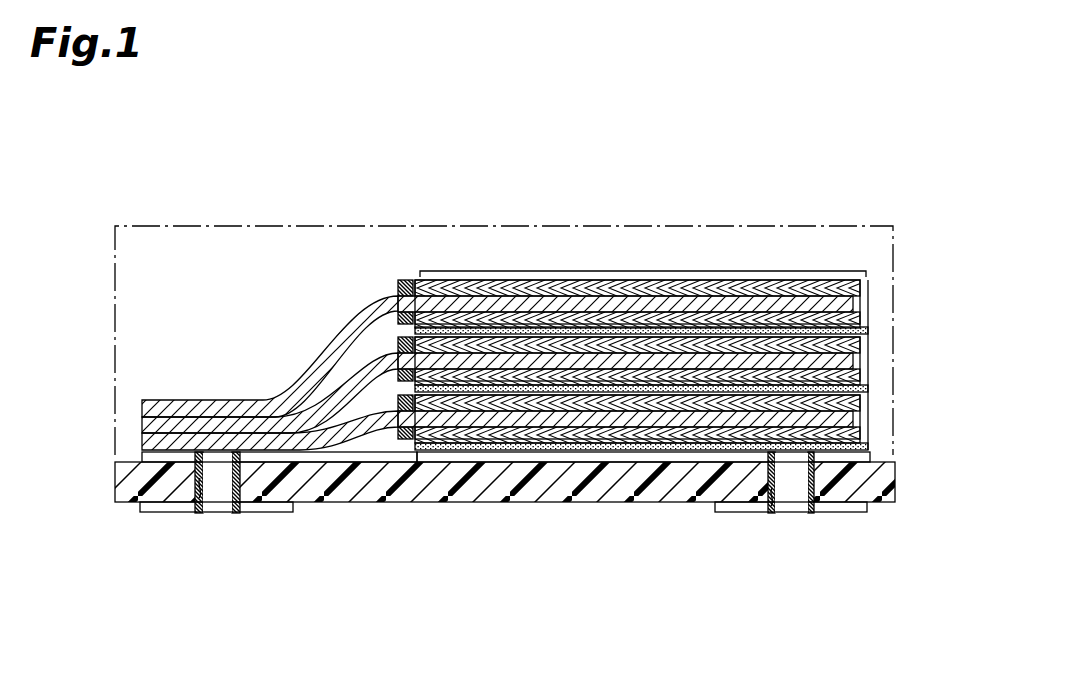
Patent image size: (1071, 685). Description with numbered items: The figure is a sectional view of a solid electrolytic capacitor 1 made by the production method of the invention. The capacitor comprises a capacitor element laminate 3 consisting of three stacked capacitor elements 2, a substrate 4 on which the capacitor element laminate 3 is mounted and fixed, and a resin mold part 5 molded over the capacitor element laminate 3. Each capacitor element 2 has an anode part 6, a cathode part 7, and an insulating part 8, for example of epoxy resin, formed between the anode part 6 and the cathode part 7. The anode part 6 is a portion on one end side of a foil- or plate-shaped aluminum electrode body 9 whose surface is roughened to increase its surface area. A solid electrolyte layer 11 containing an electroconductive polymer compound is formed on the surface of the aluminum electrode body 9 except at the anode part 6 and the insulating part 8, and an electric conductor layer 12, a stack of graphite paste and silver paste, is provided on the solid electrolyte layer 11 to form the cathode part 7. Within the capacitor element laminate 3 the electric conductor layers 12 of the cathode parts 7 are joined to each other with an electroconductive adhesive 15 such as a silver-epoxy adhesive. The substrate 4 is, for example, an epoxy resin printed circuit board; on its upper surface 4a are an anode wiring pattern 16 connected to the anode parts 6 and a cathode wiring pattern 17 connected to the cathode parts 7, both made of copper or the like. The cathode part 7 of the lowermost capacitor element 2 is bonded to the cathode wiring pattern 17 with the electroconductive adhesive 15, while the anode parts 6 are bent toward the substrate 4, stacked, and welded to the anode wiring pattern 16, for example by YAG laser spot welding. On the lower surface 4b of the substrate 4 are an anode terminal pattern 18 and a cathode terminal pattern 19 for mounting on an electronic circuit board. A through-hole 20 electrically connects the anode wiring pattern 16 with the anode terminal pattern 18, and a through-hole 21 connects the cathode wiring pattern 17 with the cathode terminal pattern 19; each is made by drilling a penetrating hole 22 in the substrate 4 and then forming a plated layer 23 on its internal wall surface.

The solid electrolytic capacitor 1 is at (877, 163).
The capacitor element 2 is at (660, 374).
The capacitor element laminate 3 is at (879, 319).
The substrate 4 is at (487, 489).
The upper surface 4a is at (118, 461).
The lower surface 4b is at (120, 503).
The resin mold part 5 is at (787, 227).
The anode part 6 is at (391, 292).
The cathode part 7 is at (640, 271).
The insulating part 8 is at (408, 280).
The aluminum electrode body 9 is at (508, 300).
The solid electrolyte layer 11 is at (545, 318).
The electric conductor layer 12 is at (585, 288).
The electroconductive adhesive 15 is at (870, 331).
The anode wiring pattern 16 is at (290, 457).
The cathode wiring pattern 17 is at (697, 458).
The anode terminal pattern 18 is at (165, 513).
The cathode terminal pattern 19 is at (840, 513).
The through-hole 20 is at (233, 515).
The through-hole 21 is at (783, 515).
The penetrating hole 22 is at (220, 505).
The plated layer 23 is at (199, 478).